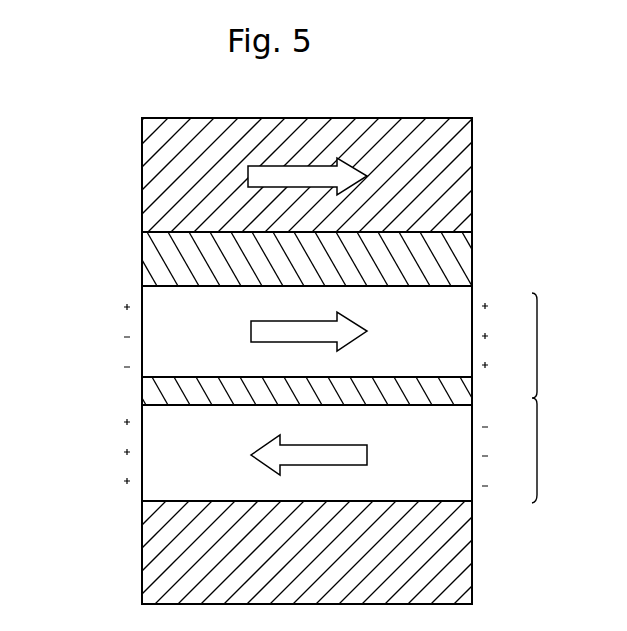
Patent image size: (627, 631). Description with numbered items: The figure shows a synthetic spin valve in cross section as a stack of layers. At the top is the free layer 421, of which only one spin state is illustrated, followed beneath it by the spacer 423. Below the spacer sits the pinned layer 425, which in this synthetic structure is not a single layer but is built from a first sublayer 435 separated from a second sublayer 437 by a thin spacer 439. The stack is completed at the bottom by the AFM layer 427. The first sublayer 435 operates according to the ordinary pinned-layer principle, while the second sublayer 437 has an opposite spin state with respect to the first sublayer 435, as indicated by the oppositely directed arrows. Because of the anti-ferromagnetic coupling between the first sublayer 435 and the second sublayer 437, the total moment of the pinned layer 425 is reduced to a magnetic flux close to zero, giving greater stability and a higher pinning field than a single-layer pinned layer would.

The free layer 421 is at (461, 160).
The spacer 423 is at (461, 253).
The pinned layer 425 is at (558, 398).
The AFM layer 427 is at (461, 573).
The first sublayer 435 is at (151, 300).
The second sublayer 437 is at (151, 490).
The spacer 439 is at (151, 390).